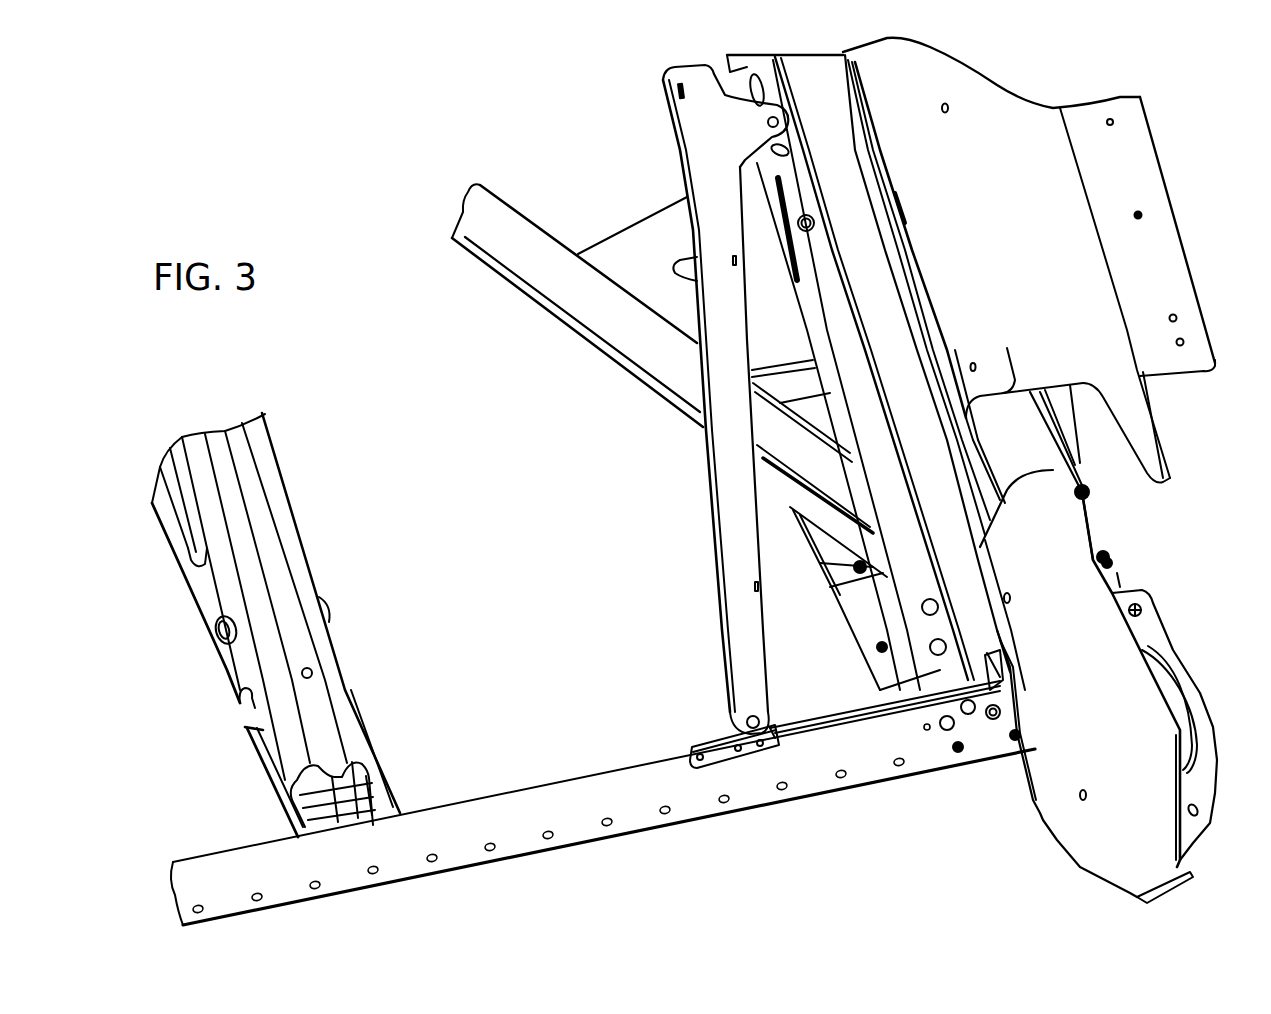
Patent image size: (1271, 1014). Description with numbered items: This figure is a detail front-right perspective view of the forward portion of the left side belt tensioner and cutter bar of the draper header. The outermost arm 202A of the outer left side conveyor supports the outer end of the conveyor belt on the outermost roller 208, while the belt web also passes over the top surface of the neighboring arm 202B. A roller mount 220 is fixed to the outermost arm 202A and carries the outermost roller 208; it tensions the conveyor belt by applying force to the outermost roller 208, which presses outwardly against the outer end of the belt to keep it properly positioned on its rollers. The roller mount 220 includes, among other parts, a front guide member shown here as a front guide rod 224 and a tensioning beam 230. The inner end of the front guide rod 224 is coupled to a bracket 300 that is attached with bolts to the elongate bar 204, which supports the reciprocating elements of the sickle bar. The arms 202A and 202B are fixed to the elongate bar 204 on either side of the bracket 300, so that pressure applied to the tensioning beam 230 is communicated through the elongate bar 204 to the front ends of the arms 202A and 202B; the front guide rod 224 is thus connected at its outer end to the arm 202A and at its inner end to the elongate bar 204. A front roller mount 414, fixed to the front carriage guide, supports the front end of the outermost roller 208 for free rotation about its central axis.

The outermost arm 202A is at (1008, 348).
The arm 202B is at (267, 522).
The elongate bar 204 is at (588, 813).
The outermost roller 208 is at (830, 147).
The roller mount 220 is at (855, 806).
The front guide rod 224 is at (847, 712).
The tensioning beam 230 is at (728, 494).
The bracket 300 is at (722, 757).
The front roller mount 414 is at (1000, 700).